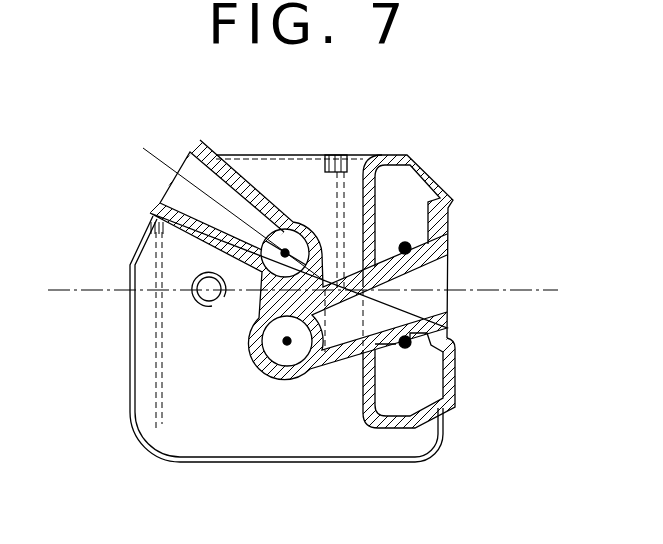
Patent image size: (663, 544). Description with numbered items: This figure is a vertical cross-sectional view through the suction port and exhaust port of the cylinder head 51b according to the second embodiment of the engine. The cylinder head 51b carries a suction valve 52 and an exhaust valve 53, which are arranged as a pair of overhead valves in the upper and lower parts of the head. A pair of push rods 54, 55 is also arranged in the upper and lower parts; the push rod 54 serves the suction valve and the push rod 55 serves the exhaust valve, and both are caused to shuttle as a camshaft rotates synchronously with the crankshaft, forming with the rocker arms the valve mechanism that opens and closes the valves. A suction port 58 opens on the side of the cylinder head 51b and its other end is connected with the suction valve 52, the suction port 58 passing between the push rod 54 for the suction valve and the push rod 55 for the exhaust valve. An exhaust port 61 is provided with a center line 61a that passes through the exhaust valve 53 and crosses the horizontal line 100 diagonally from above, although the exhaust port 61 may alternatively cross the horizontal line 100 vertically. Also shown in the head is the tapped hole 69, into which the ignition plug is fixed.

The cylinder head 51b is at (343, 464).
The suction valve 52 is at (286, 345).
The exhaust valve 53 is at (288, 251).
The push rod 54 is at (447, 336).
The push rod 55 is at (410, 243).
The suction port 58 is at (420, 290).
The exhaust port 61 is at (150, 224).
The center line 61a is at (254, 176).
The tapped hole 69 is at (210, 306).
The horizontal line 100 is at (192, 291).